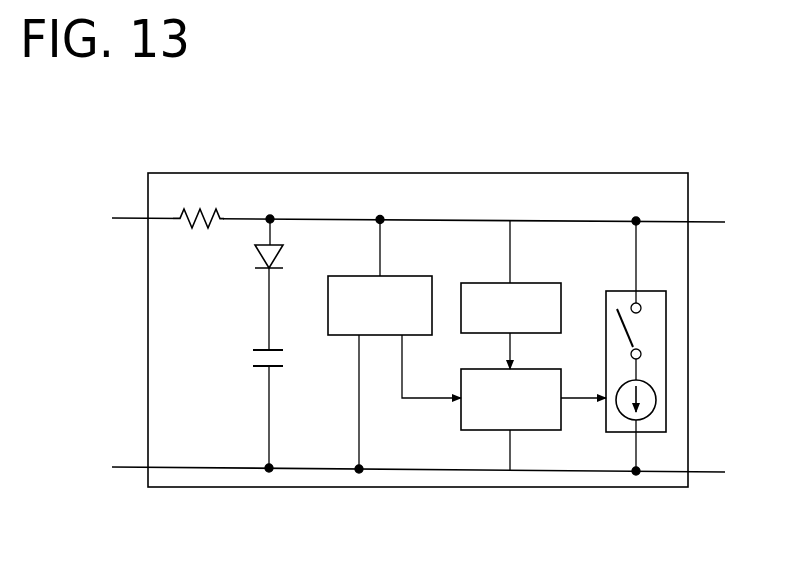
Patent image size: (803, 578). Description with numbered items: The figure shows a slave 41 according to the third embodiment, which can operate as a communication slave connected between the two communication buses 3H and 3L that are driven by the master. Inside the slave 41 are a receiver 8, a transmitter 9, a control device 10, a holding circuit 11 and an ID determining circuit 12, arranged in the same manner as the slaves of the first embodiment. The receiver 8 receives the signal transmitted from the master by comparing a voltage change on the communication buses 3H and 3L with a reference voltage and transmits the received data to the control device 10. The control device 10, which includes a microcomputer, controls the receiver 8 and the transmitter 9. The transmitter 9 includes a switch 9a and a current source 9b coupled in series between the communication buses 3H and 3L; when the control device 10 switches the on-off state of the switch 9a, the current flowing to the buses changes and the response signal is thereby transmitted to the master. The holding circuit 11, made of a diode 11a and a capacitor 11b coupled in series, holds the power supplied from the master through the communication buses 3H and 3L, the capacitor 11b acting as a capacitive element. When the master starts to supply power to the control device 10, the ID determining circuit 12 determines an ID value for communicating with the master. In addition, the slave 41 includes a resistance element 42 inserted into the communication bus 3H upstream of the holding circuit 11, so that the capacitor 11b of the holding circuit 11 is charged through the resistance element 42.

The slave 41 is at (408, 173).
The resistance element 42 is at (197, 205).
The communication bus 3H is at (715, 222).
The communication bus 3L is at (715, 473).
The holding circuit 11 is at (265, 308).
The diode 11a is at (284, 258).
The capacitor 11b is at (285, 358).
The ID determining circuit 12 is at (413, 276).
The receiver 8 is at (542, 283).
The control device 10 is at (461, 418).
The transmitter 9 is at (652, 346).
The switch 9a is at (638, 325).
The current source 9b is at (618, 413).